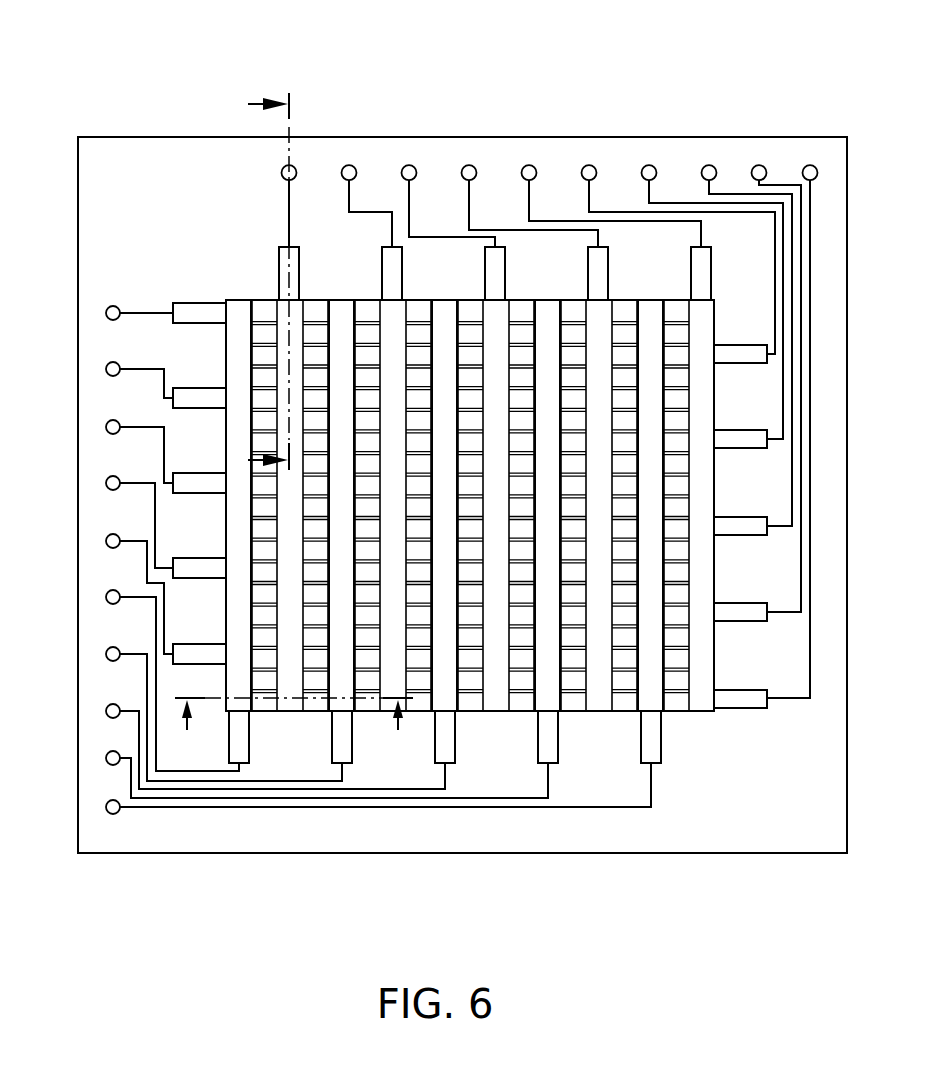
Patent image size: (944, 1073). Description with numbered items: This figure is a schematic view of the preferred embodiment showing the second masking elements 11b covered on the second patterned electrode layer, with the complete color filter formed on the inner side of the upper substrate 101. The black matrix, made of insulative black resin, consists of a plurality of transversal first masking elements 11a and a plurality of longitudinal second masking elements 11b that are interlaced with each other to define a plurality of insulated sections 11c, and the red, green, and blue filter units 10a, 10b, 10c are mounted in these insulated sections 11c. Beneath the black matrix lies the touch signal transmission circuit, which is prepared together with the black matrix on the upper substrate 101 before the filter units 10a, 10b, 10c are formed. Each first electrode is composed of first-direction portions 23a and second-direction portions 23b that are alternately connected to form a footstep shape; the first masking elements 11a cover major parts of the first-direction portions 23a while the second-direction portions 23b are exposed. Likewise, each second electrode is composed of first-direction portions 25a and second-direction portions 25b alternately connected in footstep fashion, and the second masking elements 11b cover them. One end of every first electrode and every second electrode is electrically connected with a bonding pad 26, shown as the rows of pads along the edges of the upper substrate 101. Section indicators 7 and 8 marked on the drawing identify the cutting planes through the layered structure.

The upper substrate 101 is at (848, 200).
The red filter unit 10a is at (265, 333).
The green filter unit 10b is at (315, 332).
The blue filter unit 10c is at (367, 332).
The first masking elements 11a is at (523, 305).
The second masking elements 11b is at (542, 315).
The insulated sections 11c is at (250, 332).
The first-direction portions 23a is at (193, 393).
The second-direction portions 23b is at (553, 750).
The first-direction portions 25a is at (747, 438).
The second-direction portions 25b is at (697, 260).
The bonding pad 26 is at (109, 365).
The section line 7- 7 is at (294, 732).
The section line 8- 8 is at (245, 282).